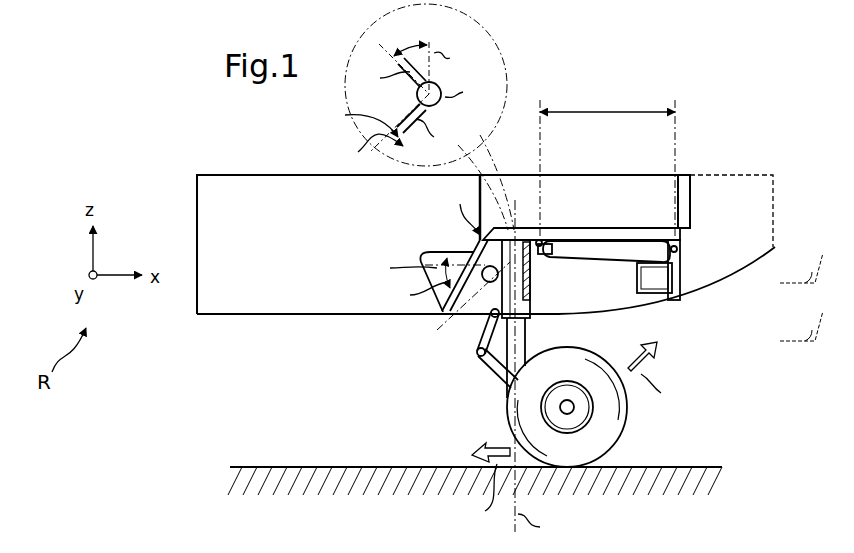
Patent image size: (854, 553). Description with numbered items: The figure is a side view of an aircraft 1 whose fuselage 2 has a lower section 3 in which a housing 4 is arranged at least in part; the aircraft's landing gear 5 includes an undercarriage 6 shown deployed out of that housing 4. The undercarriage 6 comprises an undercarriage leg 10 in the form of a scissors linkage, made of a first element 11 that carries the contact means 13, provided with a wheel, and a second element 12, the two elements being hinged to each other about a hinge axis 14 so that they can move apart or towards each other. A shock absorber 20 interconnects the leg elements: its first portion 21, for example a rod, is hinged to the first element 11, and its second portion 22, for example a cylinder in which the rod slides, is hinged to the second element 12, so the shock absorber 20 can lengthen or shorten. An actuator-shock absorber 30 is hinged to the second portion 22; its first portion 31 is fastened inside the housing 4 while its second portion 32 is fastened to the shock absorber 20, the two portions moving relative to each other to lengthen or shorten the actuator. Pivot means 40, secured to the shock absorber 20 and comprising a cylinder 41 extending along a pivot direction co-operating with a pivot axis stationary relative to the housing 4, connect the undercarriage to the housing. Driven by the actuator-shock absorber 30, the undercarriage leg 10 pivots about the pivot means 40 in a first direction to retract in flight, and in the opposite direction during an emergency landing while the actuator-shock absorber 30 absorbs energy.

The aircraft 1 is at (132, 122).
The fuselage 2 is at (278, 177).
The lower section 3 is at (197, 305).
The housing 4 is at (652, 320).
The landing gear 5 is at (262, 380).
The undercarriage 6 is at (386, 378).
The undercarriage leg 10 is at (471, 380).
The first element 11 is at (492, 372).
The second element 12 is at (531, 312).
The contact means 13 is at (626, 426).
The hinge axis 14 is at (472, 360).
The shock absorber 20 is at (535, 327).
The first portion 21 is at (537, 352).
The second portion 22 is at (532, 284).
The actuator-shock absorber 30 is at (630, 233).
The first portion 31 is at (616, 262).
The second portion 32 is at (557, 243).
The pivot means 40 is at (474, 243).
The cylinder 41 is at (490, 293).